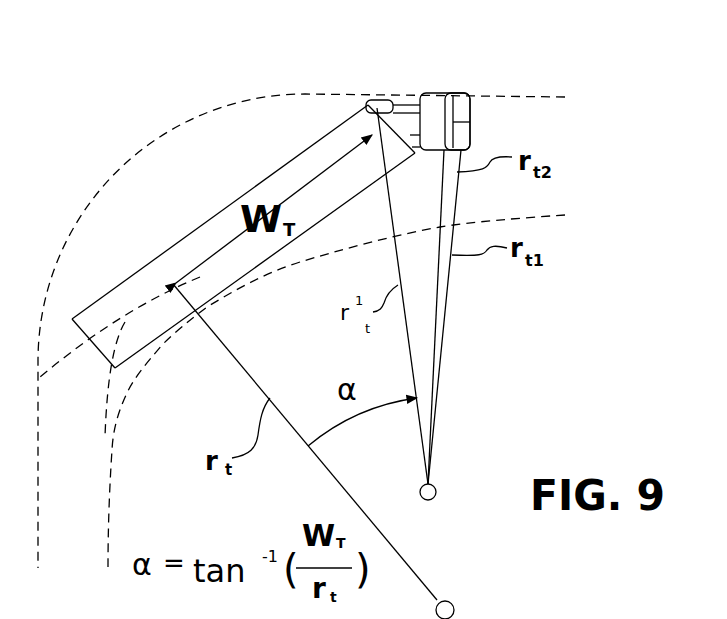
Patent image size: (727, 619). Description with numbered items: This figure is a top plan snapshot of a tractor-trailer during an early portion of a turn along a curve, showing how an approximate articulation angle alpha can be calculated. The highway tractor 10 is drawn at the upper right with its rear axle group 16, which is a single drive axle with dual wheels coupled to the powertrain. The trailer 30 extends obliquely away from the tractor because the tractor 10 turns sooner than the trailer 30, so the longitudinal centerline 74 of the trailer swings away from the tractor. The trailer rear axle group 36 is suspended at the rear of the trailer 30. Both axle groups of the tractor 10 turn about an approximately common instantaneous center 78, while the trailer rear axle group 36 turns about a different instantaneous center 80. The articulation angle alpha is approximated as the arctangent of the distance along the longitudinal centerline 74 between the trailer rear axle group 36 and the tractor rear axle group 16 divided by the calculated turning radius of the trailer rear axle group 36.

The highway tractor 10 is at (458, 90).
The rear axle group 16 is at (381, 99).
The trailer 30 is at (255, 179).
The trailer rear axle group 36 is at (152, 258).
The longitudinal centerline 74 is at (100, 437).
The instantaneous center 78 is at (436, 486).
The instantaneous center 80 is at (454, 607).